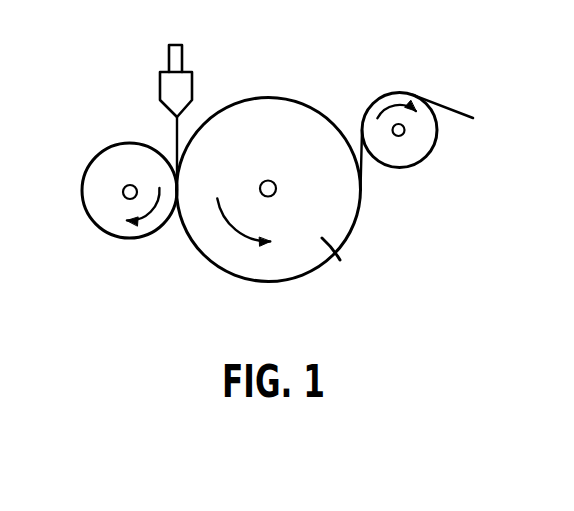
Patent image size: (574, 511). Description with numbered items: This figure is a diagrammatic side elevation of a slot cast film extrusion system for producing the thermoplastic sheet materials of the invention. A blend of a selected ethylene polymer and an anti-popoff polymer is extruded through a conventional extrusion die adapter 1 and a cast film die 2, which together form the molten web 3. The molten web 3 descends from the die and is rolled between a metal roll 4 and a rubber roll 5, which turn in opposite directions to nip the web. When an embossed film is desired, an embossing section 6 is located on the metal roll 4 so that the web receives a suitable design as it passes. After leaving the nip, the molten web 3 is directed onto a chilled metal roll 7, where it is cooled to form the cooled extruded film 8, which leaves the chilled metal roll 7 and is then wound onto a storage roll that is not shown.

The extrusion die adapter 1 is at (169, 47).
The cast film die 2 is at (160, 84).
The molten web 3 is at (177, 127).
The metal roll 4 is at (283, 112).
The rubber roll 5 is at (117, 156).
The embossing section 6 is at (330, 245).
The chilled metal roll 7 is at (419, 148).
The cooled extruded film 8 is at (472, 117).